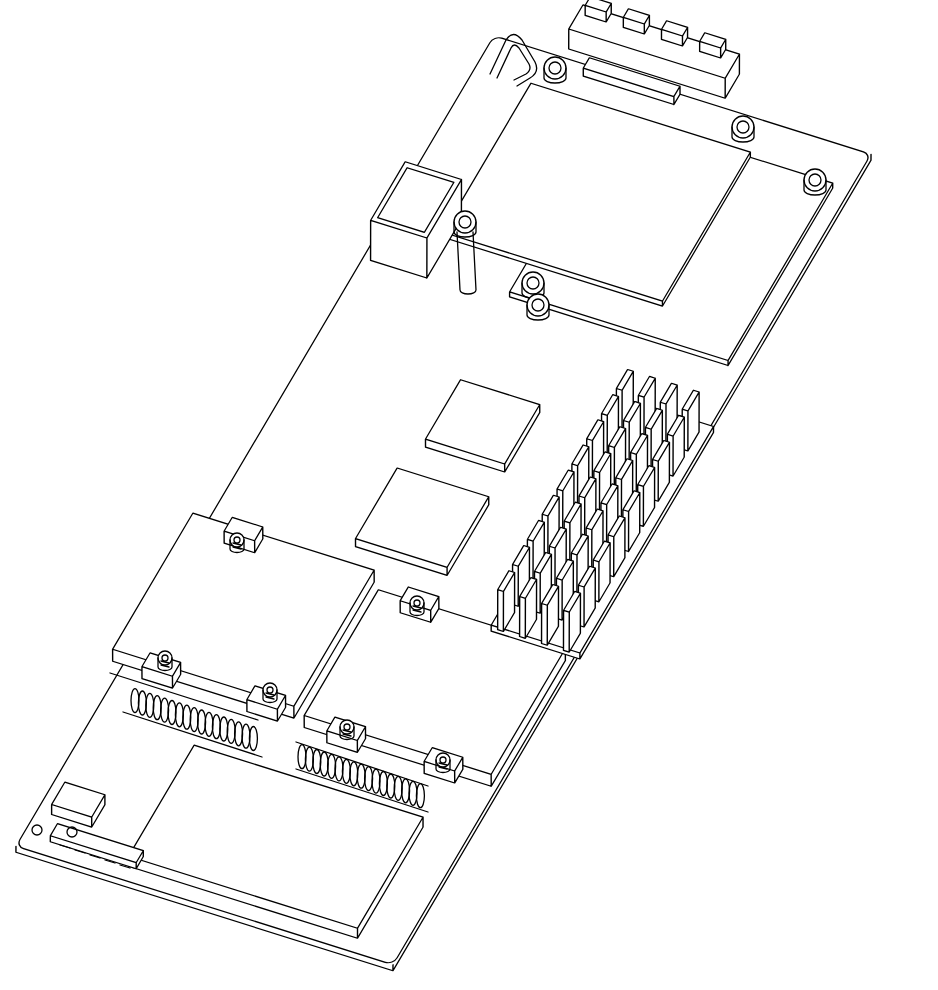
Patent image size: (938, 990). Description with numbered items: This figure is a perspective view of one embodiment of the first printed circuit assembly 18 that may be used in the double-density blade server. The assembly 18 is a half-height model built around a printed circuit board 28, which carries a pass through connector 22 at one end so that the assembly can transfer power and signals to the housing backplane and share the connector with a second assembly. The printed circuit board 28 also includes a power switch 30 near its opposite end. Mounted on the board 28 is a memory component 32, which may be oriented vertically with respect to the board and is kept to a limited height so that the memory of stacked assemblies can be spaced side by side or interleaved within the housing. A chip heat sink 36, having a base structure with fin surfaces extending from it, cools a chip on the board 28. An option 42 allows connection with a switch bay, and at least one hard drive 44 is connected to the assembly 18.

The first printed circuit assembly 18 is at (260, 251).
The pass through connector 22 is at (391, 253).
The printed circuit board 28 is at (336, 409).
The power switch 30 is at (24, 851).
The memory component 32 is at (684, 478).
The chip heat sink 36 is at (223, 629).
The option 42 is at (578, 197).
The hard drive 44 is at (262, 851).